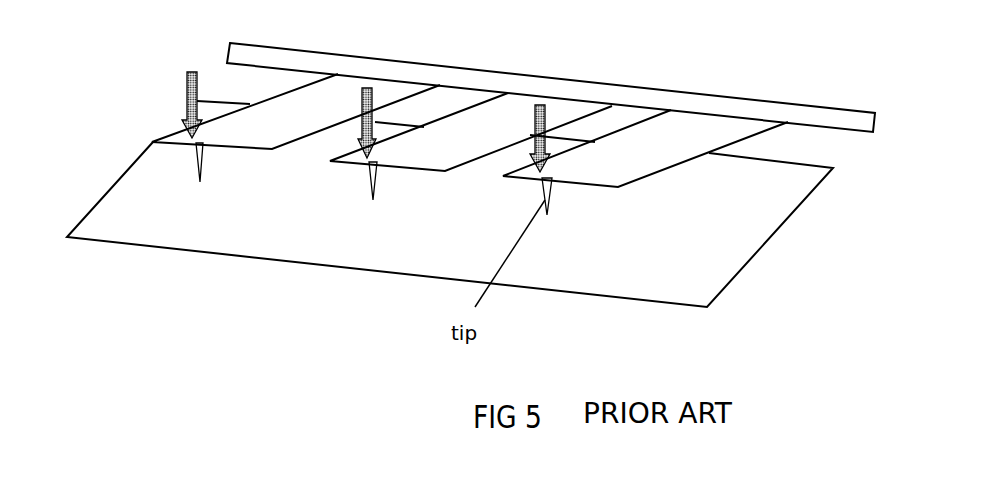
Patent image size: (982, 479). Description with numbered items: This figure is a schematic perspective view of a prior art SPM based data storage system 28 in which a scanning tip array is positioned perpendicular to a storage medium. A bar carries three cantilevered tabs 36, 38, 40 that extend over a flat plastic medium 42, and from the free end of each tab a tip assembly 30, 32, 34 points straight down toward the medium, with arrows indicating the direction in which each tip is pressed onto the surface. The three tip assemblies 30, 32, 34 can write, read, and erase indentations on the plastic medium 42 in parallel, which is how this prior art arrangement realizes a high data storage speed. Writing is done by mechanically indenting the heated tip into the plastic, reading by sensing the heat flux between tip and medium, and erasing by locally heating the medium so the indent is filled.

The prior art SPM based data storage system 28 is at (113, 174).
The tip assembly 30 is at (203, 160).
The tip assembly 32 is at (378, 183).
The tip assembly 34 is at (552, 207).
The cantilever beam 36 is at (290, 126).
The cantilever beam 38 is at (458, 156).
The cantilever beam 40 is at (657, 168).
The plastic medium 42 is at (750, 230).